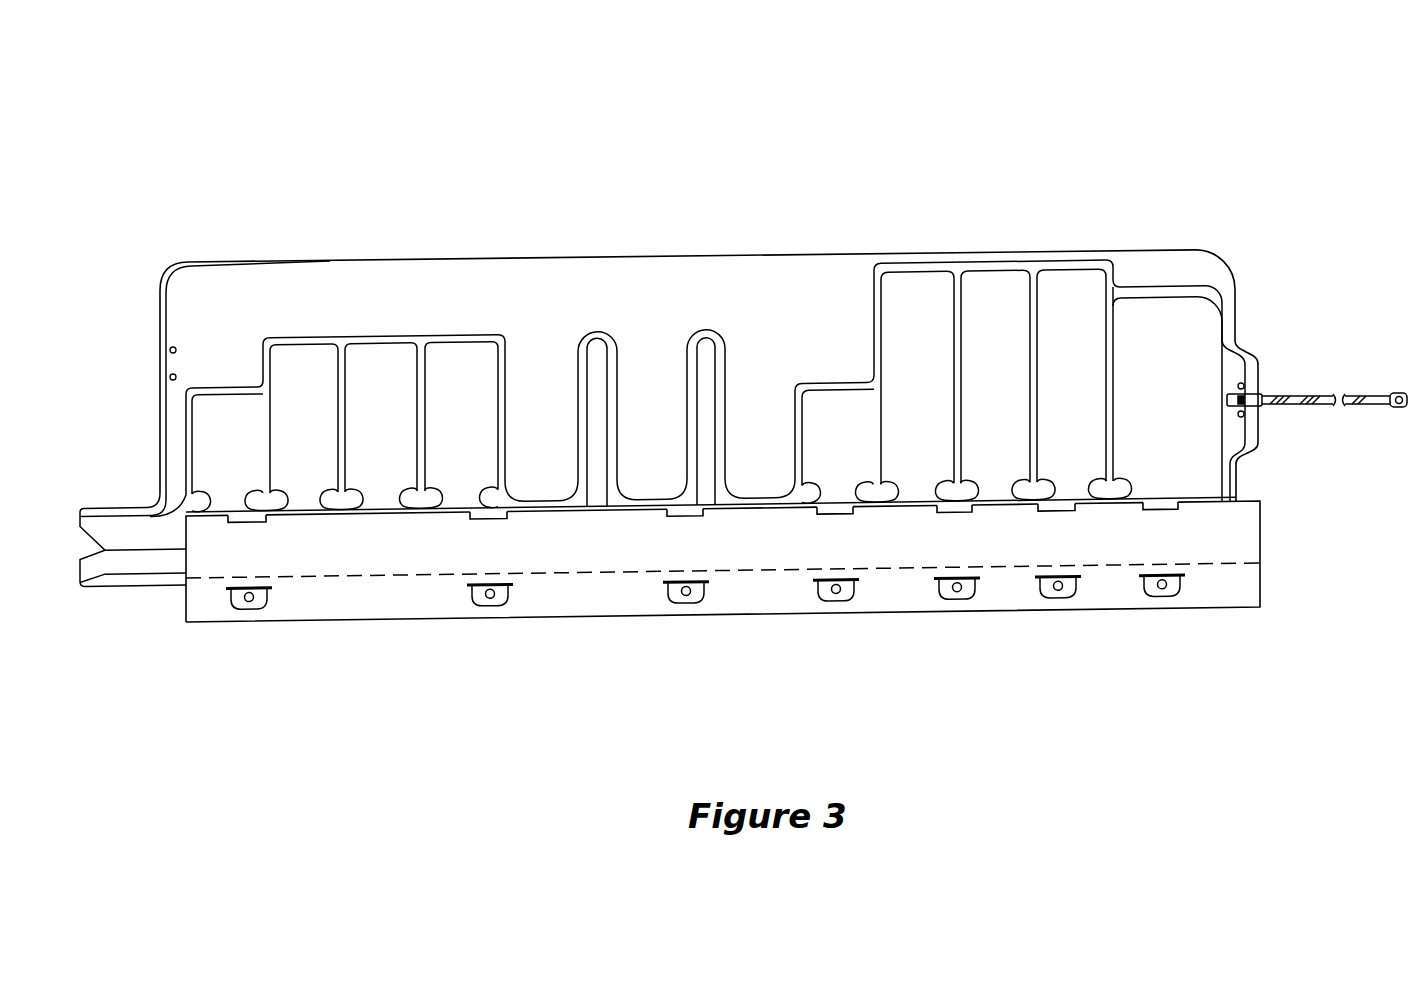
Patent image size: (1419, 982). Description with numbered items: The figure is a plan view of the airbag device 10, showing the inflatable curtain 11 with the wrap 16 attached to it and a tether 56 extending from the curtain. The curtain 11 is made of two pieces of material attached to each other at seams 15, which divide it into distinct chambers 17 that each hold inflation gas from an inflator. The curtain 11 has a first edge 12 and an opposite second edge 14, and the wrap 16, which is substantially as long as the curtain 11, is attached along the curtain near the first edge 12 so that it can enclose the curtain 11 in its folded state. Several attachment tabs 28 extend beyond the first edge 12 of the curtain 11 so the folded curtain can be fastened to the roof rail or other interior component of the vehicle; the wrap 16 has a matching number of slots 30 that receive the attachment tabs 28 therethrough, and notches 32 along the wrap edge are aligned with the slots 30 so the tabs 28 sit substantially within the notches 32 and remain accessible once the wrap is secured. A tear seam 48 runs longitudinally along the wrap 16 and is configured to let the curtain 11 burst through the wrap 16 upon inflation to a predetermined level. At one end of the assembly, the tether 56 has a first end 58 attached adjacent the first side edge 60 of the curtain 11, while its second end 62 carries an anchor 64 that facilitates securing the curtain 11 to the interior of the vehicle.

The airbag device 10 is at (240, 188).
The inflatable curtain 11 is at (1210, 264).
The first edge 12 is at (153, 585).
The second edge 14 is at (571, 257).
The seams 15 is at (263, 463).
The wrap 16 is at (1202, 502).
The chamber 17 is at (707, 391).
The attachment tabs 28 is at (256, 609).
The slots 30 is at (244, 587).
The notches 32 is at (262, 524).
The tear seam 48 is at (1230, 567).
The tether 56 is at (1297, 395).
The first end 58 is at (1263, 403).
The first side edge 60 is at (1237, 310).
The second end 62 is at (1362, 393).
The anchor 64 is at (1398, 408).